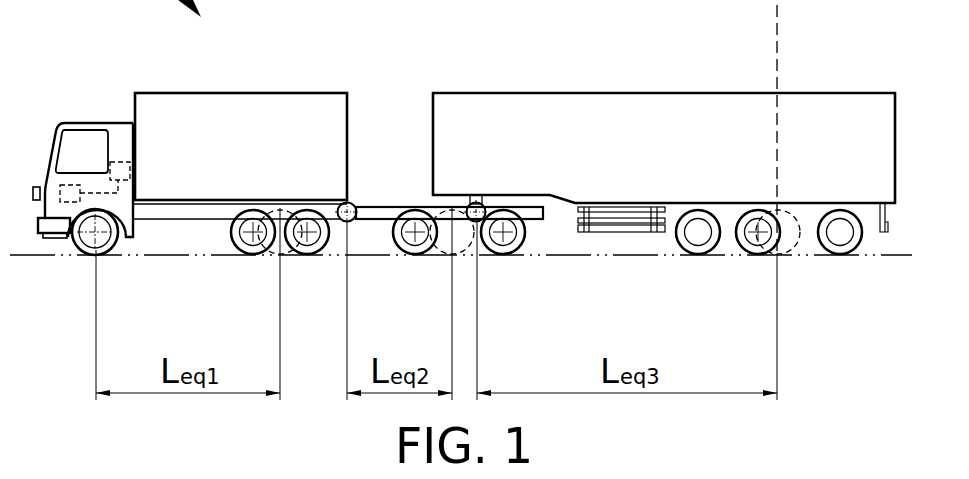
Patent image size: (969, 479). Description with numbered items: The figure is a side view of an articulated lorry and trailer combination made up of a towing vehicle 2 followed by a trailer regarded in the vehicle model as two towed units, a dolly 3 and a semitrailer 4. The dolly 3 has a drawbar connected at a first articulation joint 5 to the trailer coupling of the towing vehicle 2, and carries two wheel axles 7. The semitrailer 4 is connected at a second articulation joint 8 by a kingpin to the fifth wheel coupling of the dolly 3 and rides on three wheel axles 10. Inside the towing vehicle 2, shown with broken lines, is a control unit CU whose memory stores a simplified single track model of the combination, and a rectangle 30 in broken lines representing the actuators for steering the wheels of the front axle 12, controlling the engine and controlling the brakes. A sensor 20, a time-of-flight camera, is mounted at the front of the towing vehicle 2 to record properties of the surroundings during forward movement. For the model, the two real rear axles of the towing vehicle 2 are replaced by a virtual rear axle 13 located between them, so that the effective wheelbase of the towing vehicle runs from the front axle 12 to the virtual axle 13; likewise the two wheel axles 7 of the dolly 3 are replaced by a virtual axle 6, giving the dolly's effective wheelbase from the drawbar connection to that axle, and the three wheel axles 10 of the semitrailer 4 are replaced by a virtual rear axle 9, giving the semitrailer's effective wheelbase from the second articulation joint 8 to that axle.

The towing vehicle 2 is at (232, 110).
The dolly 3 is at (405, 205).
The semitrailer 4 is at (670, 135).
The first articulation joint 5 is at (350, 203).
The virtual axle 6 is at (437, 257).
The wheel axles 7 is at (403, 256).
The second articulation joint 8 is at (482, 207).
The virtual rear axle 9 is at (794, 254).
The wheel axles 10 is at (876, 331).
The front axle 12 is at (82, 257).
The virtual rear axle 13 is at (260, 257).
The sensor 20 is at (33, 193).
The rectangle 30 is at (78, 184).
The control unit CU is at (124, 162).